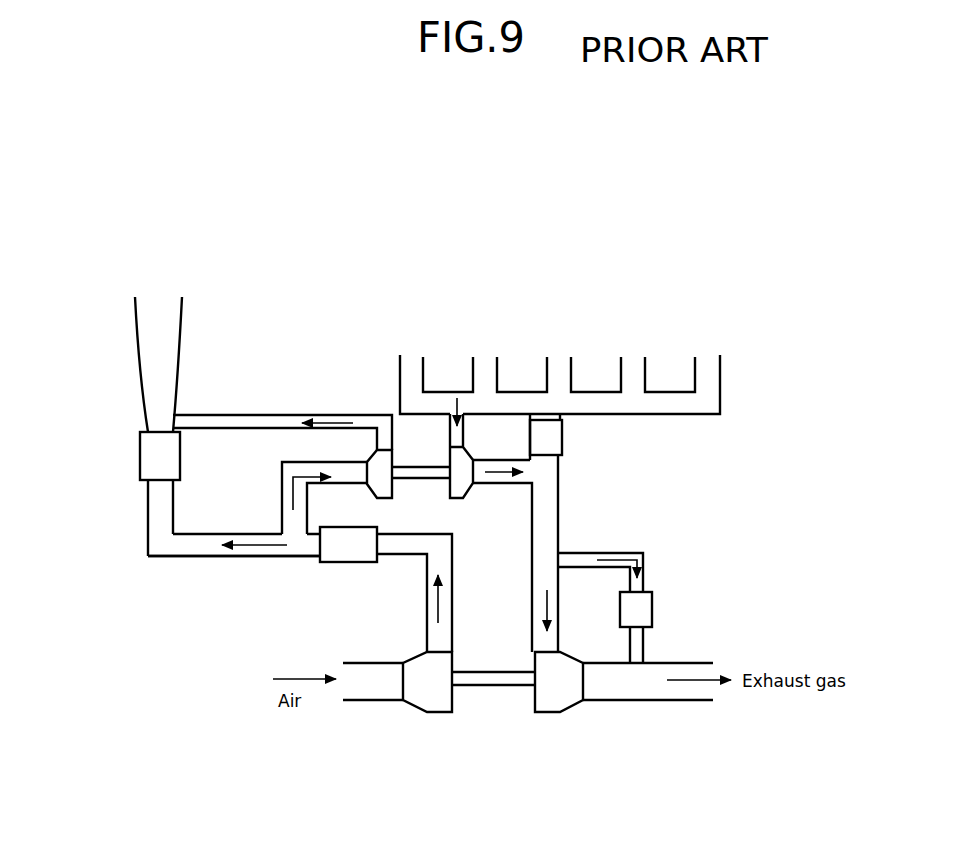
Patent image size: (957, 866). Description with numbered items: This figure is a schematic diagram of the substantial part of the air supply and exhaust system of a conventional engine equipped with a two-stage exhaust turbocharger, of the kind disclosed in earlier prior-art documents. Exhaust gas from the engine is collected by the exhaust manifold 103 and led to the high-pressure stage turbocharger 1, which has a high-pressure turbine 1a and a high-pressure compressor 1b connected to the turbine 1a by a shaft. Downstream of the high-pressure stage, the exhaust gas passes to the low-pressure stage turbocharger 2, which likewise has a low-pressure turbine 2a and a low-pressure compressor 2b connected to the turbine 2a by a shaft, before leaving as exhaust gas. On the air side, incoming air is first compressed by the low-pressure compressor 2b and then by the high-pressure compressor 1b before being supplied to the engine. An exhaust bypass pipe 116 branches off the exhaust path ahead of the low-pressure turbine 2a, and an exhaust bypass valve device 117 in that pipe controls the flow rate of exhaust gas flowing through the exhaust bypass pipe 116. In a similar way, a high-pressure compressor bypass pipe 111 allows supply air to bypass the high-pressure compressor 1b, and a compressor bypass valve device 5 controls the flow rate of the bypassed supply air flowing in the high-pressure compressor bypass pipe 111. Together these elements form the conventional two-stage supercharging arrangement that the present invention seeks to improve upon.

The high-pressure stage turbocharger 1 is at (492, 421).
The high-pressure turbine 1a is at (468, 458).
The high-pressure compressor 1b is at (383, 453).
The low-pressure stage turbocharger 2 is at (484, 734).
The low-pressure turbine 2a is at (555, 698).
The low-pressure compressor 2b is at (425, 697).
The compressor bypass valve device 5 is at (140, 470).
The exhaust manifold 103 is at (667, 402).
The high-pressure compressor bypass pipe 111 is at (187, 545).
The exhaust bypass pipe 116 is at (627, 553).
The exhaust bypass valve device 117 is at (653, 612).